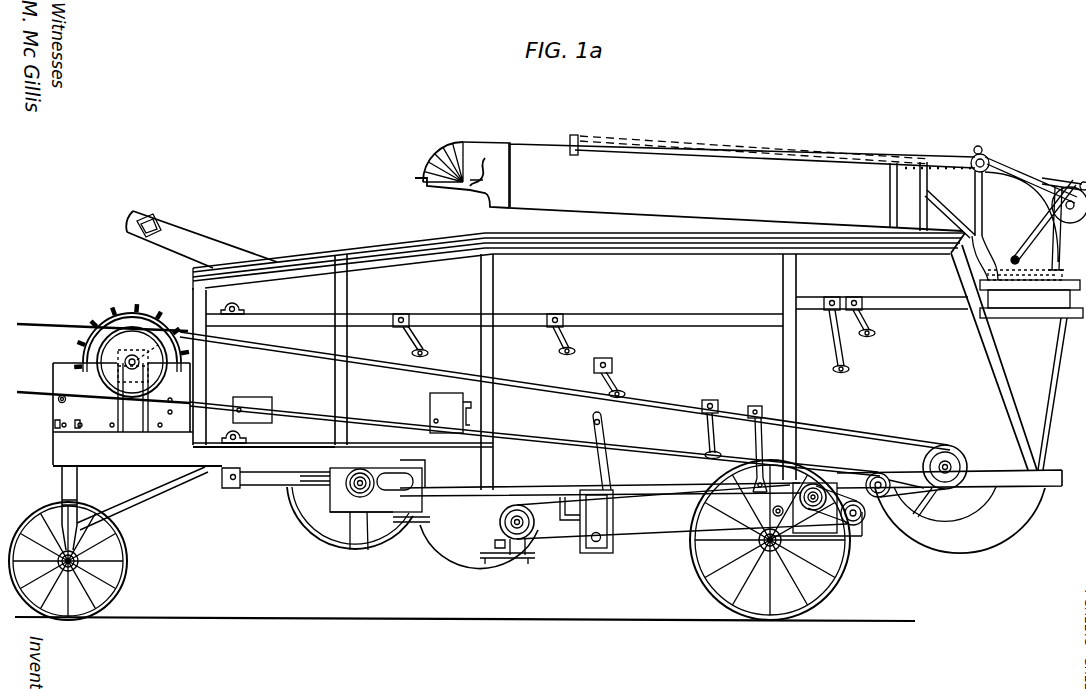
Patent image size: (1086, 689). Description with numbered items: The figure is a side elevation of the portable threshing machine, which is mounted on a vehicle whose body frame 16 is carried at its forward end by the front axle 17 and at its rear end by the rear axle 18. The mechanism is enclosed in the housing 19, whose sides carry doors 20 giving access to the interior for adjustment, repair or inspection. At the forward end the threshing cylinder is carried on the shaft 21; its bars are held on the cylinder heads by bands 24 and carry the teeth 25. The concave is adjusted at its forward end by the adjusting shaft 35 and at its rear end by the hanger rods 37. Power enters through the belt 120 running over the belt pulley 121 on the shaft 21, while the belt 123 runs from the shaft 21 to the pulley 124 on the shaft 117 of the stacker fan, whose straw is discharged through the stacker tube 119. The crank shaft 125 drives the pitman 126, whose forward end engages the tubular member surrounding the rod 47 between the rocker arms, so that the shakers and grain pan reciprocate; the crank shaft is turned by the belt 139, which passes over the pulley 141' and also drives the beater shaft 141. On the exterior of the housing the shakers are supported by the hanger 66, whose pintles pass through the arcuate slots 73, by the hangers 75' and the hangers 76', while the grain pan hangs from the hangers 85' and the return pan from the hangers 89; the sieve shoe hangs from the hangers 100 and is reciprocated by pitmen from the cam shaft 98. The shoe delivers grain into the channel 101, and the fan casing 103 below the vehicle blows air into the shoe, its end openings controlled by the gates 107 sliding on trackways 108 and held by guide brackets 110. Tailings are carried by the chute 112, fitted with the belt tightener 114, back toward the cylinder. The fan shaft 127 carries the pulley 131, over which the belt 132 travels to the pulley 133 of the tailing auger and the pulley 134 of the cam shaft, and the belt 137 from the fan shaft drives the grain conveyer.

The body frame 16 is at (117, 458).
The front axle 17 is at (69, 566).
The rear axle 18 is at (764, 558).
The housing 19 is at (639, 326).
The doors 20 is at (245, 398).
The shaft 21 is at (131, 360).
The bands 24 is at (108, 318).
The teeth 25 is at (140, 316).
The adjusting shaft 35 is at (58, 400).
The hanger rods 37 is at (168, 389).
The rod 47 is at (228, 490).
The hanger 66 is at (401, 337).
The arcuate slots 73 is at (428, 352).
The hangers 75' is at (583, 320).
The hangers 76' is at (750, 347).
The hangers 85' is at (700, 429).
The hangers 89 is at (833, 338).
The cam shaft 98 is at (848, 527).
The hangers 100 is at (607, 438).
The channel 101 is at (611, 554).
The fan casing 103 is at (531, 566).
The gates 107 is at (469, 514).
The trackways 108 is at (424, 538).
The guide brackets 110 is at (514, 560).
The chute 112 is at (208, 246).
The belt tightener 114 is at (139, 215).
The shaft 117 is at (956, 470).
The stacker tube 119 is at (702, 186).
The belt 120 is at (35, 323).
The belt pulley 121 is at (110, 367).
The belt 123 is at (283, 356).
The pulley 124 is at (947, 460).
The crank shaft 125 is at (366, 477).
The pitman 126 is at (262, 492).
The shaft 127 is at (506, 530).
The pulley 131 is at (521, 517).
The belt 132 is at (638, 527).
The pulley 133 is at (818, 491).
The pulley 134 is at (866, 528).
The belt 137 is at (578, 553).
The belt 139 is at (175, 318).
The shaft 141 is at (254, 366).
The pulley 141' is at (342, 541).